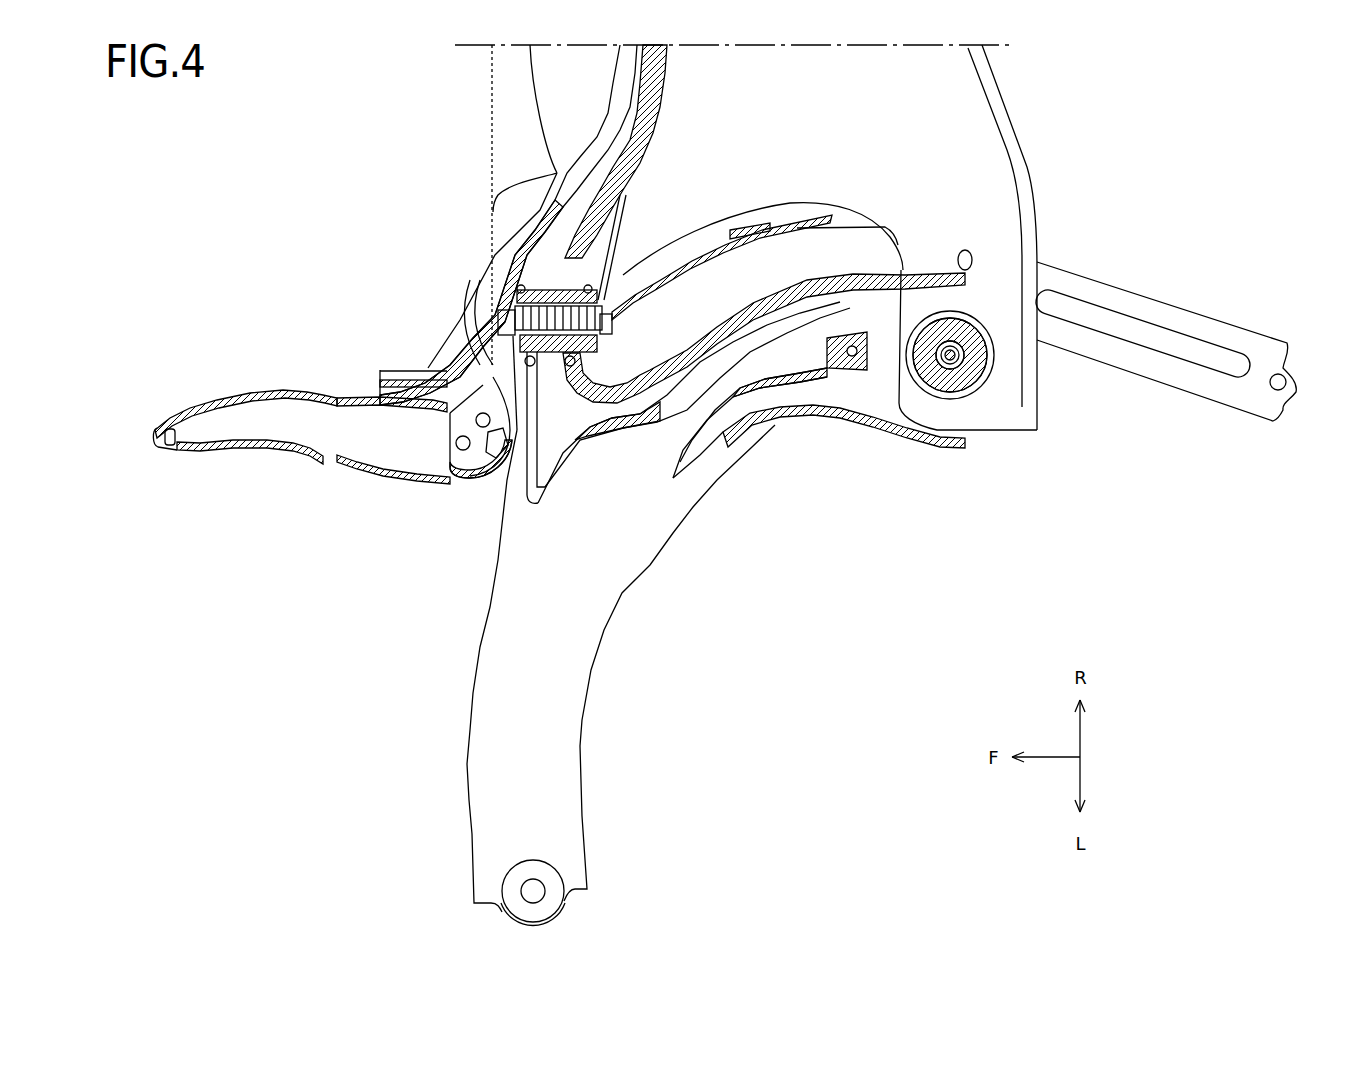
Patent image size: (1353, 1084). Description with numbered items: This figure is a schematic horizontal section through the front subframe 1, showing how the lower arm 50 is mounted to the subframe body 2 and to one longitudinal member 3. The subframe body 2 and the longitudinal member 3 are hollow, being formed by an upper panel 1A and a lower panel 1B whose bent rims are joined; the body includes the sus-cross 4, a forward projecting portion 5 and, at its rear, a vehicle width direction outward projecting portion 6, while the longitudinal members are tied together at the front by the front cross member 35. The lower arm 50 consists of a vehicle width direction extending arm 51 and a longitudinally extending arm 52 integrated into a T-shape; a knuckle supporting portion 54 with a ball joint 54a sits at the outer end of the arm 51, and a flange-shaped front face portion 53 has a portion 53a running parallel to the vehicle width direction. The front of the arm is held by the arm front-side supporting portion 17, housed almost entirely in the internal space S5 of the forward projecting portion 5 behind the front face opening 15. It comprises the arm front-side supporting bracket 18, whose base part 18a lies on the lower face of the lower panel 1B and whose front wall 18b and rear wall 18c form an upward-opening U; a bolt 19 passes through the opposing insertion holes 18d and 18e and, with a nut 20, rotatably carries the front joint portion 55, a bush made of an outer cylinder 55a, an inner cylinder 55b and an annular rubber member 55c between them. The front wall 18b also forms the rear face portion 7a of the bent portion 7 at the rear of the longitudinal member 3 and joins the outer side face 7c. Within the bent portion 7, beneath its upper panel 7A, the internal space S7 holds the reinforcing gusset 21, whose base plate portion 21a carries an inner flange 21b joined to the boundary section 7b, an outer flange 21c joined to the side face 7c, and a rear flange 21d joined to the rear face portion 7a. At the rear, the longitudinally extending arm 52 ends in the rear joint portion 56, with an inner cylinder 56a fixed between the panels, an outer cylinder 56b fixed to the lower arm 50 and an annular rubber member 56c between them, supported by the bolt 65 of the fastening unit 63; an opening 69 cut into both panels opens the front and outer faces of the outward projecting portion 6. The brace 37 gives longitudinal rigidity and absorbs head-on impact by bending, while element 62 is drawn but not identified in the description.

The subframe 1 is at (360, 105).
The upper panel 1A is at (708, 252).
The lower panel 1B is at (1035, 413).
The subframe body 2 is at (1032, 172).
The longitudinal member 3 is at (294, 463).
The sus-cross 4 is at (1008, 97).
The forward projecting portion 5 is at (561, 228).
The vehicle width direction outward projecting portion 6 is at (1035, 395).
The bent portion 7 is at (481, 484).
The upper panel 7A is at (403, 478).
The rear face portion 7a is at (537, 421).
The boundary section 7b is at (460, 357).
The outer side face 7c is at (473, 490).
The front face opening 15 is at (480, 317).
The arm front-side supporting portion 17 is at (513, 284).
The arm front-side supporting bracket 18 is at (685, 349).
The base part 18a is at (530, 408).
The front wall 18b is at (470, 363).
The rear wall 18c is at (622, 222).
The insertion hole 18d is at (497, 290).
The insertion hole 18e is at (640, 313).
The bolt 19 is at (507, 280).
The nut 20 is at (612, 324).
The reinforcing gusset 21 is at (443, 457).
The base plate portion 21a is at (449, 433).
The vehicle width direction inner flange 21b is at (432, 368).
The vehicle width direction outer flange 21c is at (463, 484).
The rear flange 21d is at (486, 460).
The front cross member 35 is at (490, 107).
The brace 37 is at (1162, 302).
The lower arm 50 is at (467, 694).
The vehicle width direction extending arm 51 is at (467, 785).
The longitudinally extending arm 52 is at (800, 430).
The front face portion 53 is at (497, 562).
The front face portion 53a is at (533, 389).
The knuckle supporting portion 54 is at (572, 916).
The ball joint 54a is at (505, 921).
The front joint portion 55 is at (547, 283).
The outer cylinder 55a is at (568, 293).
The inner cylinder 55b is at (597, 345).
The annular rubber member 55c is at (590, 366).
The rear joint portion 56 is at (930, 298).
The inner cylinder 56a is at (958, 320).
The outer cylinder 56b is at (978, 390).
The annular rubber member 56c is at (978, 332).
The mounting plate 62 is at (1020, 436).
The fastening unit 63 is at (967, 407).
The bolt 65 is at (962, 360).
The opening 69 is at (893, 373).
The internal space S5 is at (602, 245).
The internal space S7 is at (400, 374).